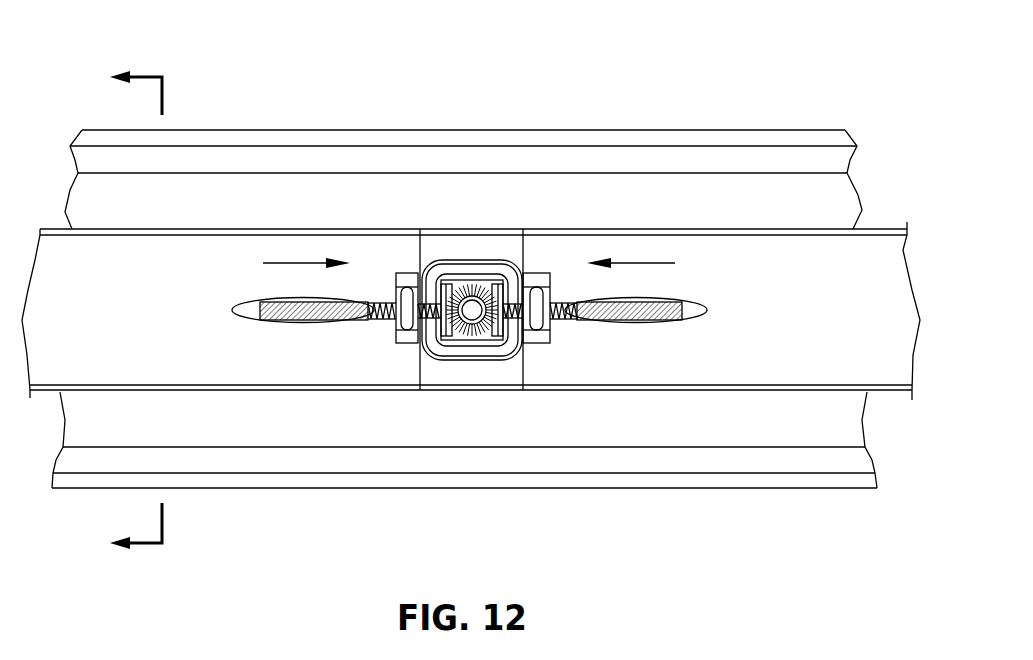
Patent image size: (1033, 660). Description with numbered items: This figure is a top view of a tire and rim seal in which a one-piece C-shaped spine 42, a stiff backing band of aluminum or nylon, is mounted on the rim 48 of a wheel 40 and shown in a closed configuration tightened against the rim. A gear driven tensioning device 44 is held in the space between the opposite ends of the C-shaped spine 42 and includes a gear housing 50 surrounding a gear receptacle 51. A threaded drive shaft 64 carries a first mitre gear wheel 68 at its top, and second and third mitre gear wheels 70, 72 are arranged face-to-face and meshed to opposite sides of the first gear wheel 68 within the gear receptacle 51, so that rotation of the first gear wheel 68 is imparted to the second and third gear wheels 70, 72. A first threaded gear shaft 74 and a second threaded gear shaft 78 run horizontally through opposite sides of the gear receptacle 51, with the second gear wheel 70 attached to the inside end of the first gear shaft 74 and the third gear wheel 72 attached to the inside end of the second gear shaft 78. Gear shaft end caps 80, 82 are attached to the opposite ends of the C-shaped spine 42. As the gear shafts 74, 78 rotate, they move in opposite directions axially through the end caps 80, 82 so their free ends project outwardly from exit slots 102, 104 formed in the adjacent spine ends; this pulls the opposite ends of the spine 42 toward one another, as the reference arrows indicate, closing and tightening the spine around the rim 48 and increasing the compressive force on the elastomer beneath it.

The wheel 40 is at (688, 77).
The C-shaped spine 42 is at (218, 250).
The gear driven tensioning device 44 is at (533, 253).
The rim 48 is at (295, 130).
The gear housing 50 is at (487, 392).
The gear receptacle 51 is at (443, 348).
The threaded drive shaft 64 is at (471, 316).
The first mitre gear wheel 68 is at (472, 298).
The second mitre gear wheel 70 is at (497, 284).
The third mitre gear wheel 72 is at (446, 284).
The first threaded gear shaft 74 is at (640, 323).
The second threaded gear shaft 78 is at (292, 322).
The gear shaft end cap 80 is at (547, 312).
The gear shaft end cap 82 is at (398, 312).
The exit slot 102 is at (707, 313).
The exit slot 104 is at (247, 317).